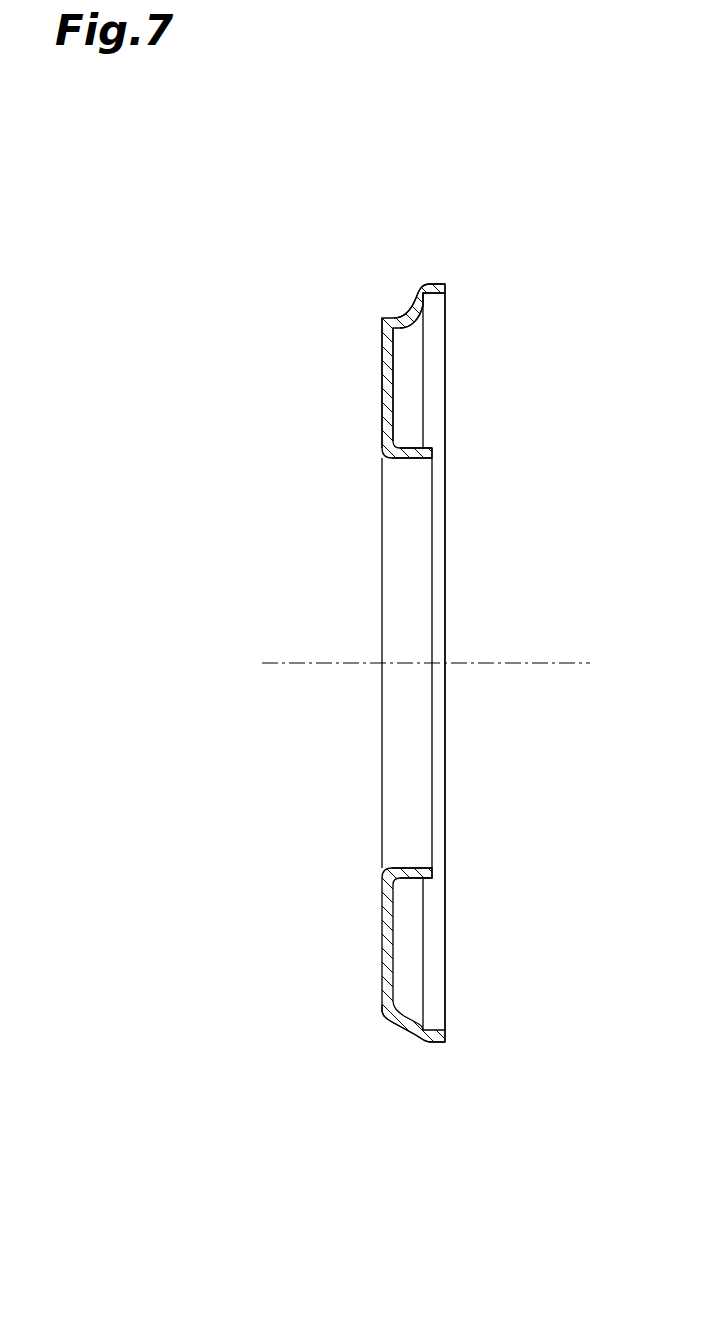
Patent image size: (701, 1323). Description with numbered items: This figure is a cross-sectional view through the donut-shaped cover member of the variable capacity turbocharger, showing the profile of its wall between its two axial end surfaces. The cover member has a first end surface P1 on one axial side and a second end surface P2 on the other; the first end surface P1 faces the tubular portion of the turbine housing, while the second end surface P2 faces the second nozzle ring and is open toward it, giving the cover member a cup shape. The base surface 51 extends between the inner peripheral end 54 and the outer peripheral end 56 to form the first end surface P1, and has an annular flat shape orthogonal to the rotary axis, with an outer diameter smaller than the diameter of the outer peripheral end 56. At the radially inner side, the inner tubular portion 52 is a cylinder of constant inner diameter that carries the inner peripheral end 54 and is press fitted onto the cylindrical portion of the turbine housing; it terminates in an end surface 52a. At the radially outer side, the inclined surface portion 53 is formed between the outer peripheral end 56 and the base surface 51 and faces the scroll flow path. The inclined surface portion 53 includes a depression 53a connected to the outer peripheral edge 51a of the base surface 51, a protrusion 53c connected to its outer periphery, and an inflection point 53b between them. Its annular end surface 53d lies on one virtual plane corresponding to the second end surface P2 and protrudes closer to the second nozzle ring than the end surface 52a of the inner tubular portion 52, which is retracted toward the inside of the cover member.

The base surface 51 is at (379, 387).
The outer peripheral edge 51a is at (384, 318).
The inner tubular portion 52 is at (405, 462).
The end surface of the inner tubular portion 52a is at (433, 453).
The inclined surface portion 53 is at (292, 1072).
The depression 53a is at (400, 1018).
The inflection point 53b is at (413, 1027).
The protrusion 53c is at (427, 1043).
The end surface of the inclined surface portion 53d is at (447, 1042).
The inner peripheral end 54 is at (408, 867).
The outer peripheral end 56 is at (432, 281).
The first end surface P1 is at (382, 717).
The second end surface P2 is at (446, 716).